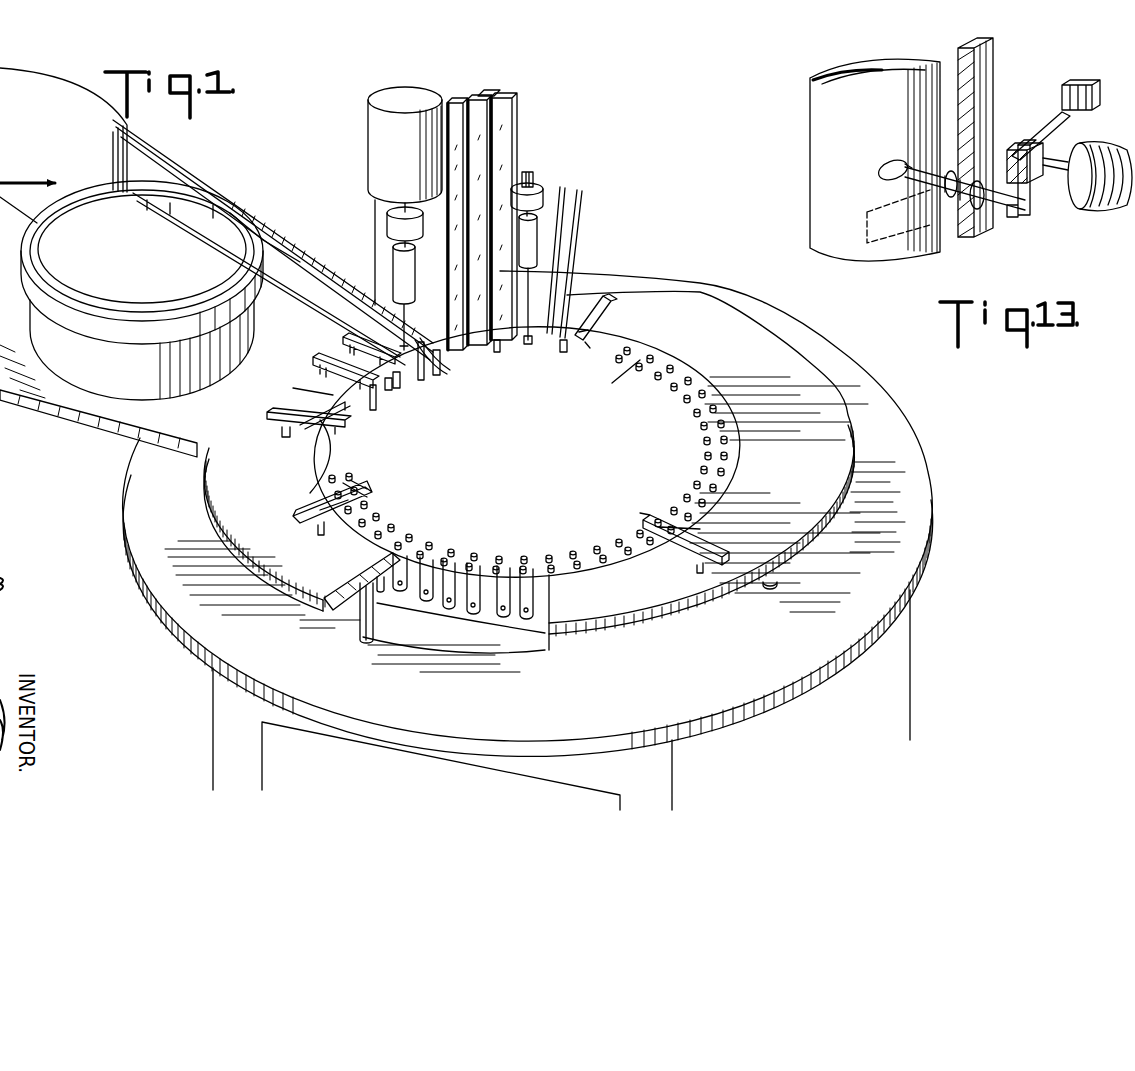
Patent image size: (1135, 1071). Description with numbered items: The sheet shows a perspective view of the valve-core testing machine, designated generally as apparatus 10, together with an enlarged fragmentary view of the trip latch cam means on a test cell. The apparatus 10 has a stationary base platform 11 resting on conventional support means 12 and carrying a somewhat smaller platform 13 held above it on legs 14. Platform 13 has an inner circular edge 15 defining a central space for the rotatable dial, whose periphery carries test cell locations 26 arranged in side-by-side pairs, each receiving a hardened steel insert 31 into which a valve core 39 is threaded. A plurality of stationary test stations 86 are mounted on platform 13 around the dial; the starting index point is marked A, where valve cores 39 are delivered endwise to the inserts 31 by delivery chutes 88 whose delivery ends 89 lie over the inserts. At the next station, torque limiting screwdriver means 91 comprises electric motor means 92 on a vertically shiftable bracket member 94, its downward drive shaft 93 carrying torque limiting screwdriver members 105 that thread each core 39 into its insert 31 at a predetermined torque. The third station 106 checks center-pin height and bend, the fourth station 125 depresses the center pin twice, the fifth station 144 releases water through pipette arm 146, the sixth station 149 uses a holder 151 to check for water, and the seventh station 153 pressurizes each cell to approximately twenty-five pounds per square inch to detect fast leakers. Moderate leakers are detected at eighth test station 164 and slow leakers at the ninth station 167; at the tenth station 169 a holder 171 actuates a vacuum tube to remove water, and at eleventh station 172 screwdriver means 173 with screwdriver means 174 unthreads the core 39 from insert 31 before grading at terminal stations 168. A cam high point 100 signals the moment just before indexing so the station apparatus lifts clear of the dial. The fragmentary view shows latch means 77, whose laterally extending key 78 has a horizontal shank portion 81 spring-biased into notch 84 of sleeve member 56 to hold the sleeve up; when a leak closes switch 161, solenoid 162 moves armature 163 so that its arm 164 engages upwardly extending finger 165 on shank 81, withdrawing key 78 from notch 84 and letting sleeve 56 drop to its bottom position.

In FIG. 1, the apparatus 10 is at (952, 508).
In FIG. 1, the stationary base platform 11 is at (918, 455).
In FIG. 1, the support means 12 is at (660, 770).
In FIG. 1, the platform 13 is at (848, 437).
In FIG. 1, the legs 14 is at (362, 620).
In FIG. 1, the inner circular edge 15 is at (742, 440).
In FIG. 1, the test cell locations 26 is at (480, 548).
In FIG. 1, the hardened steel insert 31 is at (419, 382).
In FIG. 1, the valve cores 39 is at (213, 206).
In FIG. 13, the sleeve member 56 is at (830, 100).
In FIG. 13, the latch means 77 is at (941, 232).
In FIG. 13, the key 78 is at (897, 177).
In FIG. 13, the horizontal shank portion 81 is at (1013, 214).
In FIG. 13, the notch 84 is at (896, 160).
In FIG. 1, the stationary test stations 86 is at (268, 432).
In FIG. 1, the delivery chutes 88 is at (293, 245).
In FIG. 1, the delivery ends 89 is at (437, 356).
In FIG. 1, the torque limiting screwdriver means 91 is at (370, 95).
In FIG. 1, the electric motor means 92 is at (412, 96).
In FIG. 1, the drive shaft 93 is at (404, 213).
In FIG. 1, the bracket member 94 is at (377, 252).
In FIG. 1, the high point 100 is at (388, 393).
In FIG. 1, the torque limiting screwdriver members 105 is at (400, 332).
In FIG. 1, the third station 106 is at (398, 392).
In FIG. 1, the fourth station 125 is at (360, 428).
In FIG. 1, the fifth station 144 is at (290, 388).
In FIG. 1, the pipette arm 146 is at (275, 405).
In FIG. 1, the sixth station 149 is at (318, 470).
In FIG. 1, the holder 151 is at (317, 407).
In FIG. 1, the seventh station 153 is at (378, 490).
In FIG. 1, the switch 161 is at (622, 377).
In FIG. 13, the solenoid 162 is at (1124, 158).
In FIG. 13, the armature 163 is at (997, 150).
In FIG. 1, the arm 164 is at (678, 547).
In FIG. 13, the arm 164 is at (1030, 140).
In FIG. 13, the finger 165 is at (1040, 193).
In FIG. 1, the ninth station 167 is at (614, 305).
In FIG. 1, the terminal stations 168 is at (498, 354).
In FIG. 1, the tenth station 169 is at (565, 355).
In FIG. 1, the holder 171 is at (560, 292).
In FIG. 1, the eleventh station 172 is at (563, 250).
In FIG. 1, the screwdriver means 173 is at (540, 170).
In FIG. 1, the screwdriver means 174 is at (560, 283).
In FIG. 1, the starting index point A is at (440, 378).